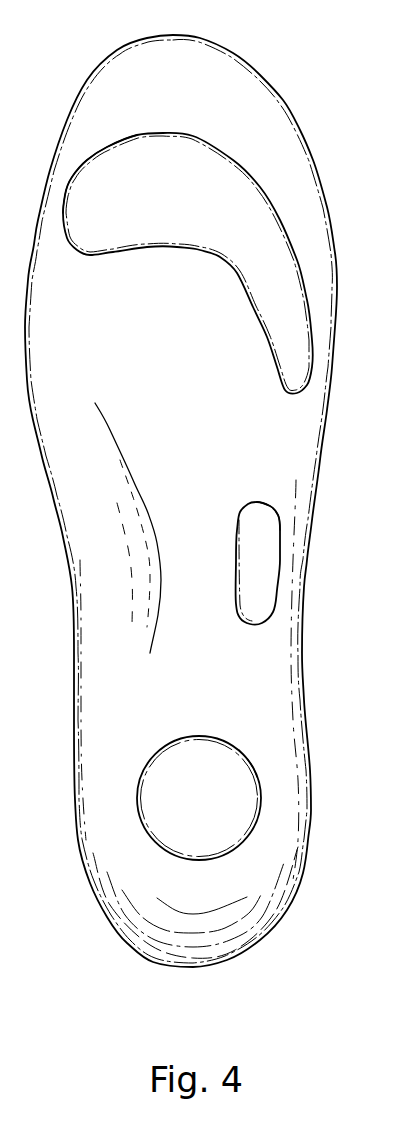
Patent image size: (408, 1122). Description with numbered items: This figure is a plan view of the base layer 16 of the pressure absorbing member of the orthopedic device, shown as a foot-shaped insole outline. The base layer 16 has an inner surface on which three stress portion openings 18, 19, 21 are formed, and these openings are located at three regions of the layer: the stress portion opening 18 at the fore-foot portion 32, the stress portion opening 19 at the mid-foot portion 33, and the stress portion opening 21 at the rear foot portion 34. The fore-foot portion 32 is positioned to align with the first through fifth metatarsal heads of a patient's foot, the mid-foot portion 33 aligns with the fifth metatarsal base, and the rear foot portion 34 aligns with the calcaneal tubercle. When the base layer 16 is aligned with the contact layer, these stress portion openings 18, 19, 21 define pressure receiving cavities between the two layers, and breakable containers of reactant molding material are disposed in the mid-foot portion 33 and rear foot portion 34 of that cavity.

The base layer 16 is at (42, 457).
The stress portion opening 18 is at (72, 184).
The stress portion opening 19 is at (270, 505).
The stress portion opening 21 is at (249, 762).
The fore-foot portion 32 is at (179, 207).
The mid-foot portion 33 is at (270, 570).
The rear foot portion 34 is at (211, 803).